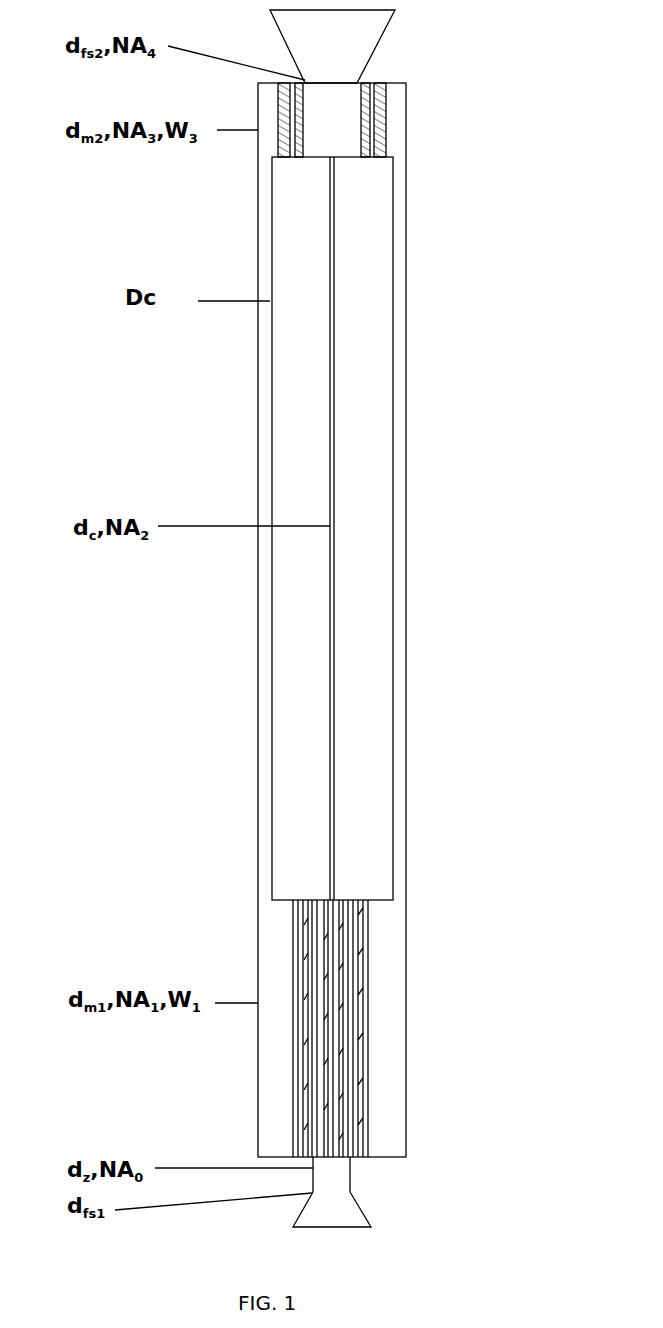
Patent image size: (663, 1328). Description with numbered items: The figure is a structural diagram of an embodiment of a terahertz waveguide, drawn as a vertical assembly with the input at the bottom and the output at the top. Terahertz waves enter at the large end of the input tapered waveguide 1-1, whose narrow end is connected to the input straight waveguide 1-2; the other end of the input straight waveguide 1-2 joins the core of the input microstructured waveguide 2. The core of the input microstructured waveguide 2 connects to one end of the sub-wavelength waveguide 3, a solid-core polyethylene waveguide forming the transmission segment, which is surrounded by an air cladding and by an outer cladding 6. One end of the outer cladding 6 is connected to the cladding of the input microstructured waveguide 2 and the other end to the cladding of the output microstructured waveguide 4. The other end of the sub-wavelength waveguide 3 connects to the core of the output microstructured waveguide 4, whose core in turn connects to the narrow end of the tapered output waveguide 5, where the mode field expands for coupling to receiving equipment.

The output waveguide 5 is at (383, 40).
The output microstructured waveguide 4 is at (407, 145).
The outer cladding 6 is at (414, 417).
The sub-wavelength waveguide 3 is at (331, 692).
The input microstructured waveguide 2 is at (412, 1094).
The input straight waveguide 1-2 is at (350, 1183).
The input tapered waveguide 1-1 is at (371, 1220).